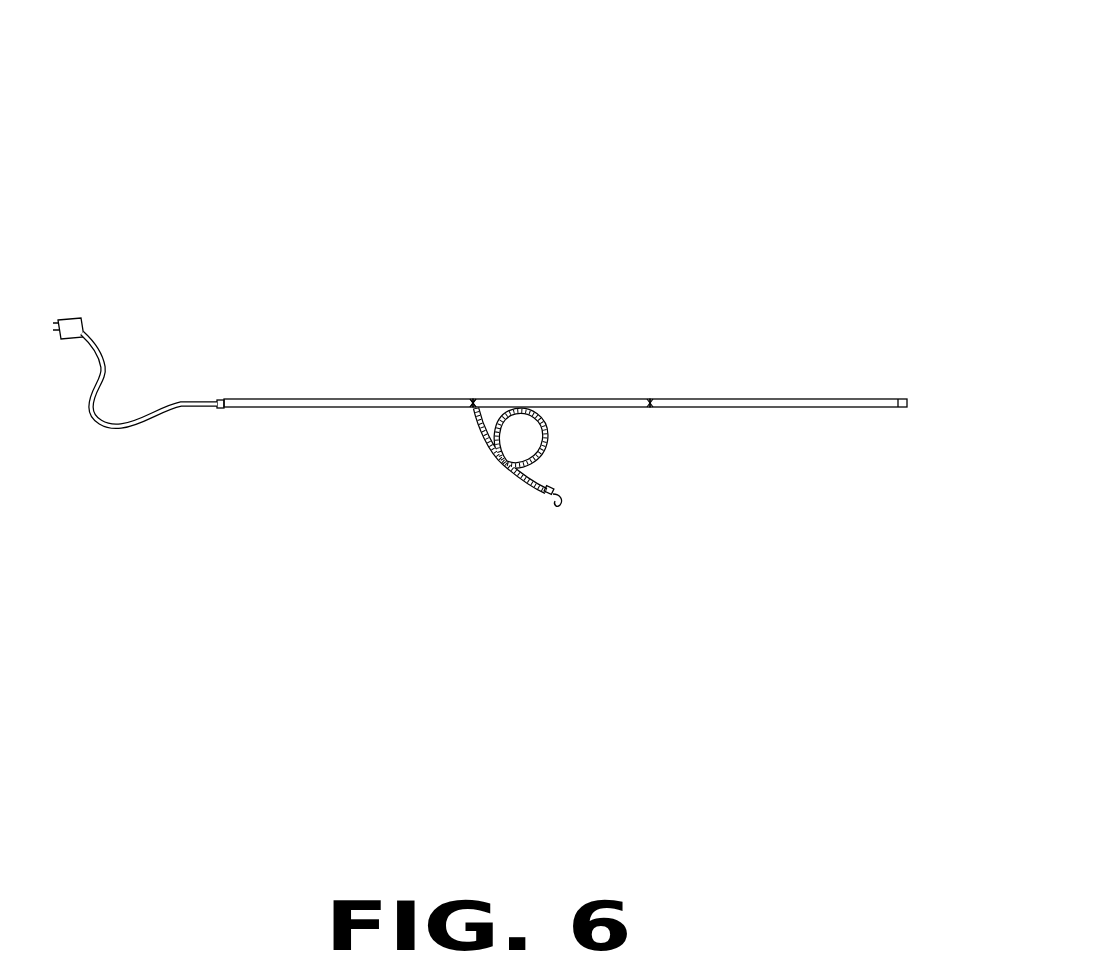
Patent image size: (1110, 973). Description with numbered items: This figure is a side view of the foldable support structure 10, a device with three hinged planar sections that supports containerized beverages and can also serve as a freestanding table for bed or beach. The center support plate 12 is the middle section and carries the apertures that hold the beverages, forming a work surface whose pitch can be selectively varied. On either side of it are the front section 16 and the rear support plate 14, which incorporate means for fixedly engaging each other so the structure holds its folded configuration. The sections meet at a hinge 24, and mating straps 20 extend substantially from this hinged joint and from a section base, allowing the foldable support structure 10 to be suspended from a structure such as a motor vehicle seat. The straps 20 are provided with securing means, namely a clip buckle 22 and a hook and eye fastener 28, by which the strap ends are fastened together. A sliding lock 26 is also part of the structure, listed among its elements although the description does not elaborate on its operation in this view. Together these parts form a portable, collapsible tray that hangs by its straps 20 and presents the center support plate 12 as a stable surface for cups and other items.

The foldable support structure 10 is at (683, 112).
The center support plate 12 is at (552, 398).
The rear support plate 14 is at (320, 399).
The front apertures 16 is at (795, 398).
The strap 20 is at (510, 475).
The buckle 22 is at (73, 340).
The hinge 24 is at (472, 402).
The sliding lock 26 is at (473, 406).
The hook and eye fastener 28 is at (568, 497).